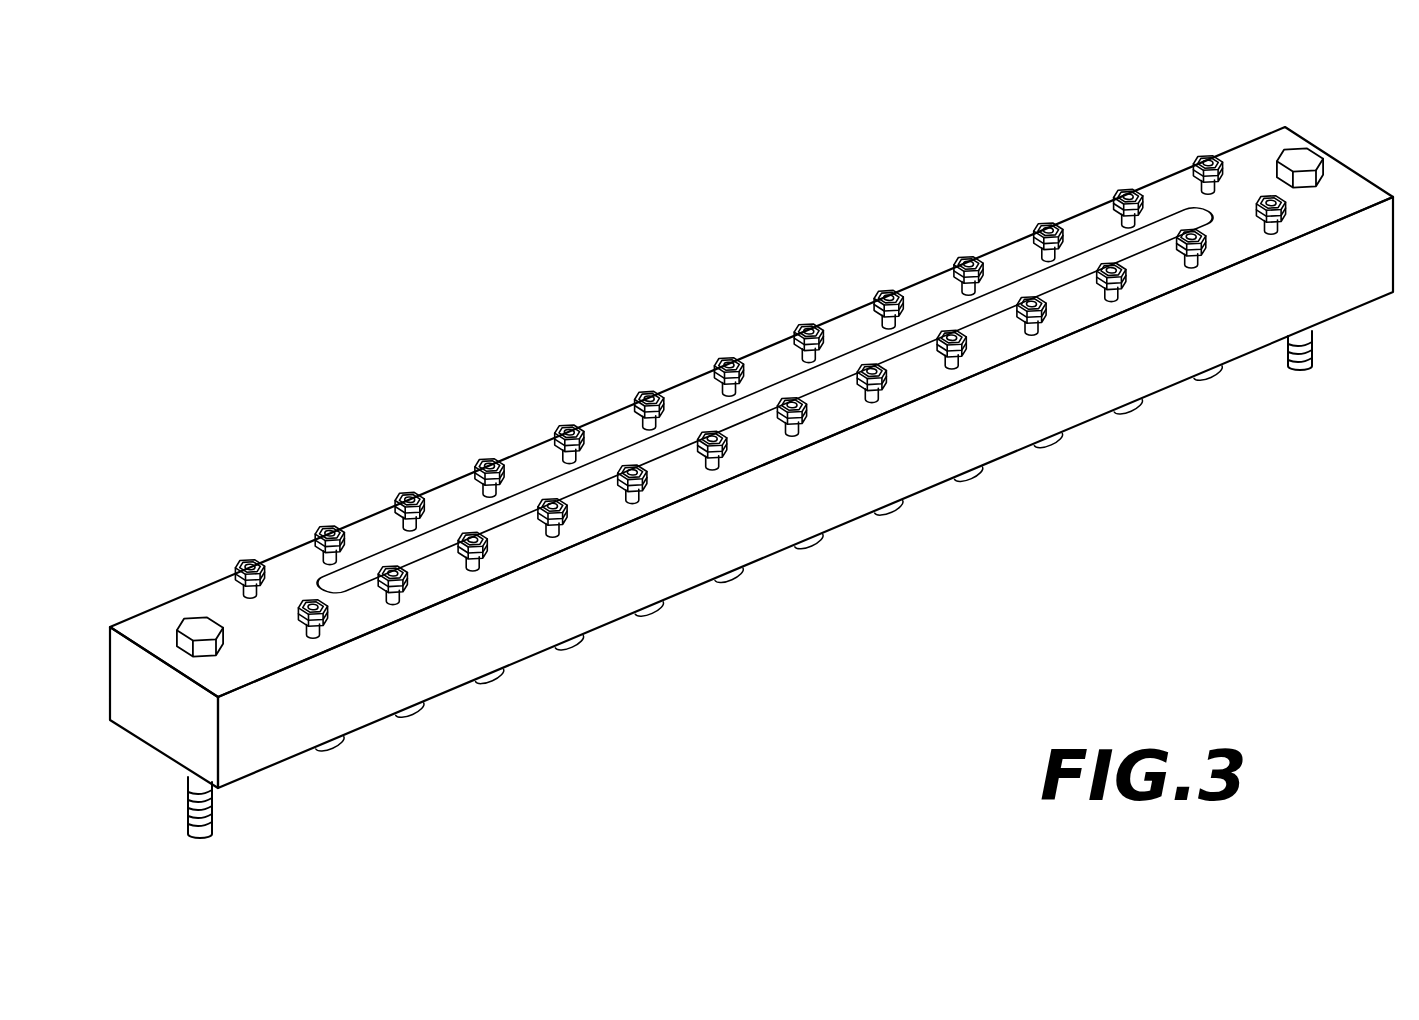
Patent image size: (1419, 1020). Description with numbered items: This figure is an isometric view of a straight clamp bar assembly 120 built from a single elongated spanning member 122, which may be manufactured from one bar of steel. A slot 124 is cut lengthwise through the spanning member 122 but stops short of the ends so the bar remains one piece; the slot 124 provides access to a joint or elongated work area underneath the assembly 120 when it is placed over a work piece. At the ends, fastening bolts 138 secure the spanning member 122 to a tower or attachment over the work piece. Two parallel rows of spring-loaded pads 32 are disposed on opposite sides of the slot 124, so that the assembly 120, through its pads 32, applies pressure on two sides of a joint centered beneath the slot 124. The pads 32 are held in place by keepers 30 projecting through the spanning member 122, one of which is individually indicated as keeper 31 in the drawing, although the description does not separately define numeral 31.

The keeper 30 is at (763, 335).
The nut 31 is at (1200, 150).
The spring-loaded pad 32 is at (1313, 358).
The clamp bar assembly 120 is at (751, 457).
The spanning member 122 is at (475, 405).
The slot 124 is at (660, 460).
The fastening bolt 138 is at (200, 627).